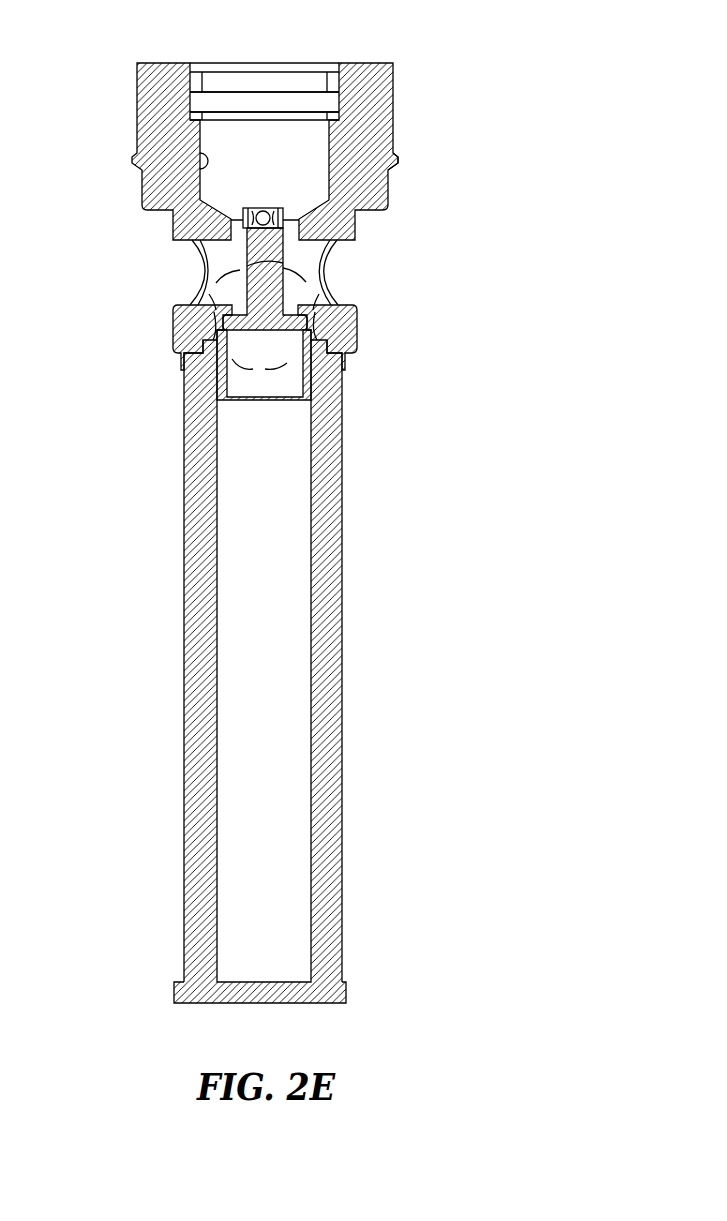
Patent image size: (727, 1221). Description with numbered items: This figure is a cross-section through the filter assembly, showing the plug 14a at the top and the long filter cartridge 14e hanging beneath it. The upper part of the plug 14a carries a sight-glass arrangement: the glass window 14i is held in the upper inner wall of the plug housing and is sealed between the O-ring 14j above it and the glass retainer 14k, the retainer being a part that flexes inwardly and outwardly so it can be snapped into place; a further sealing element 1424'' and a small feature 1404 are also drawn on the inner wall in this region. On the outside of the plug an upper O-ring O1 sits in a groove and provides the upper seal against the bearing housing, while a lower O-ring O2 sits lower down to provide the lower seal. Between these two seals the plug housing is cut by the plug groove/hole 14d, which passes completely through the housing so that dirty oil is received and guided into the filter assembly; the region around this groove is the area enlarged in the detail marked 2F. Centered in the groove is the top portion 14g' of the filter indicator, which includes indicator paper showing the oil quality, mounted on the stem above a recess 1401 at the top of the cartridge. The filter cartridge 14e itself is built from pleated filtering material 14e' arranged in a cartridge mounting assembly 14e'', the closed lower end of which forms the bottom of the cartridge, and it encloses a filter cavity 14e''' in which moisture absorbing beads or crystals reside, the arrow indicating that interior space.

The plug 14a is at (309, 122).
The O-ring 14j is at (380, 110).
The glass retainer 14k is at (197, 82).
The glass window 14i is at (200, 102).
The seal ring 1424'' is at (185, 132).
The detent 1404 is at (202, 170).
The upper O-ring O1 is at (396, 158).
The top portion of filter indicator 14g' is at (346, 253).
The plug groove/hole 14d is at (323, 253).
The detail region 2F is at (323, 277).
The lower O-ring O2 is at (353, 347).
The cavity liner 1401 is at (212, 378).
The filter cartridge 14e is at (204, 679).
The pleated filtering material 14e' is at (148, 661).
The cartridge mounting assembly 14e'' is at (229, 1000).
The filter cavity 14e''' is at (186, 691).